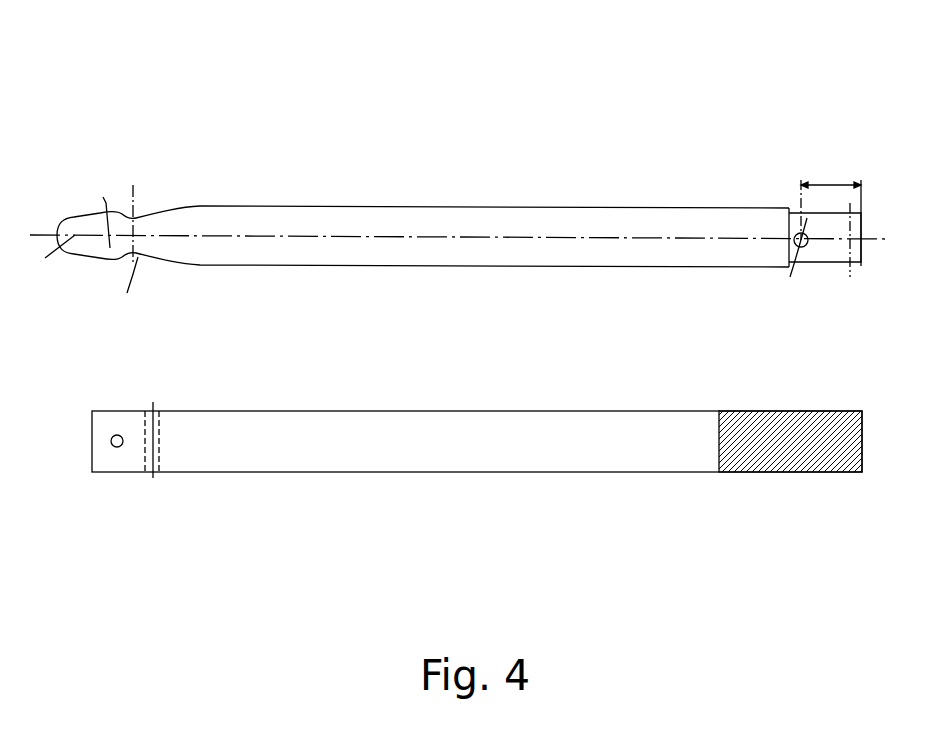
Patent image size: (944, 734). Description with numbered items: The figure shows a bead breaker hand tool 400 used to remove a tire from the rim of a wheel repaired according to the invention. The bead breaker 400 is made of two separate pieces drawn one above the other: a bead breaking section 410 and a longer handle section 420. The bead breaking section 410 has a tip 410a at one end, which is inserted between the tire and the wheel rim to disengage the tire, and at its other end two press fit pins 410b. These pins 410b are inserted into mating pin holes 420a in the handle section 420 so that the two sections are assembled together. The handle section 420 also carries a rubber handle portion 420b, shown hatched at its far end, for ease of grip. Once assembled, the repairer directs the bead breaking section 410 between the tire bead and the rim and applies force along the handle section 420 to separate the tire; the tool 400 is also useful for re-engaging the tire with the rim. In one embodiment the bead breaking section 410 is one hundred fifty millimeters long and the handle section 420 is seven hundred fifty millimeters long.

The bead breaker hand tool 400 is at (787, 58).
The bead breaking section 410 is at (487, 223).
The tip 410a is at (95, 242).
The press fit pins 410b is at (812, 252).
The handle section 420 is at (460, 462).
The pin holes 420a is at (120, 454).
The rubber handle portion 420b is at (793, 458).